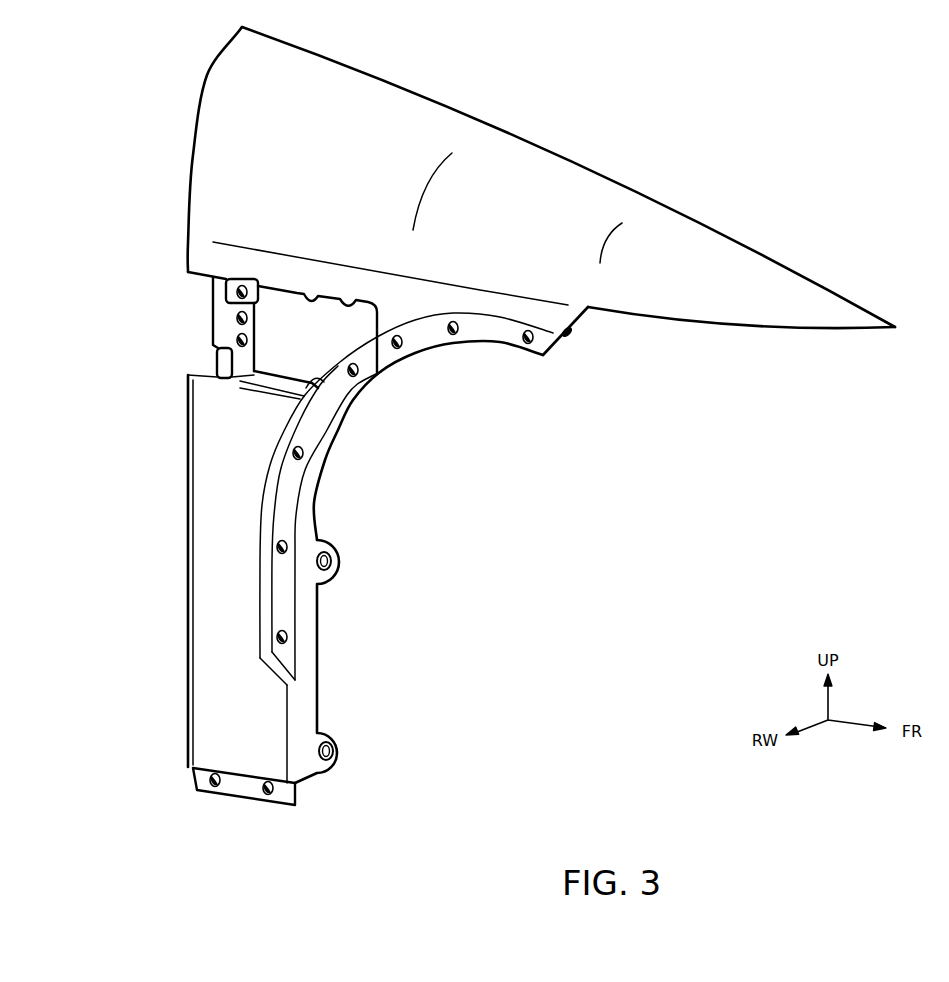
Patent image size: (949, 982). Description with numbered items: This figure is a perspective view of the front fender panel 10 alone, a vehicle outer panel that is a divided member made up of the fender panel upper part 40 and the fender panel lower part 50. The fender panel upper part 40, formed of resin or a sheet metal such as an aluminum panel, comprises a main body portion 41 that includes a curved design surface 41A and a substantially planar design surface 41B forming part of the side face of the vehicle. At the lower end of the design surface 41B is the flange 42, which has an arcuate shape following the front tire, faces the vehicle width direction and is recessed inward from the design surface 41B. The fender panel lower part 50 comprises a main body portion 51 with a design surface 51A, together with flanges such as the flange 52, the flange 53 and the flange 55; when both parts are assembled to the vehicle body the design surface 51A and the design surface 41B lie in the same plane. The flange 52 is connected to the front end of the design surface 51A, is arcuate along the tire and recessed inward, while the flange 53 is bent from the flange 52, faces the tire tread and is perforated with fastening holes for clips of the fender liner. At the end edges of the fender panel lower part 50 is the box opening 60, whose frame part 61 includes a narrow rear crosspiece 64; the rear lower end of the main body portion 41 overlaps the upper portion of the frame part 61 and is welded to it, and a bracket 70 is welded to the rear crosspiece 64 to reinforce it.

The front fender panel 10 is at (782, 175).
The fender panel upper part 40 is at (541, 241).
The main body portion 41 is at (373, 110).
The curved design surface 41A is at (742, 277).
The design surface 41B is at (562, 317).
The flange 42 is at (543, 343).
The fender panel lower part 50 is at (315, 571).
The main body portion 51 is at (182, 579).
The design surface 51A is at (205, 593).
The flange 52 is at (288, 603).
The flange 53 is at (302, 762).
The flange 55 is at (195, 778).
The box opening 60 is at (264, 475).
The frame part 61 is at (327, 345).
The rear crosspiece 64 is at (218, 310).
The bracket 70 is at (223, 367).